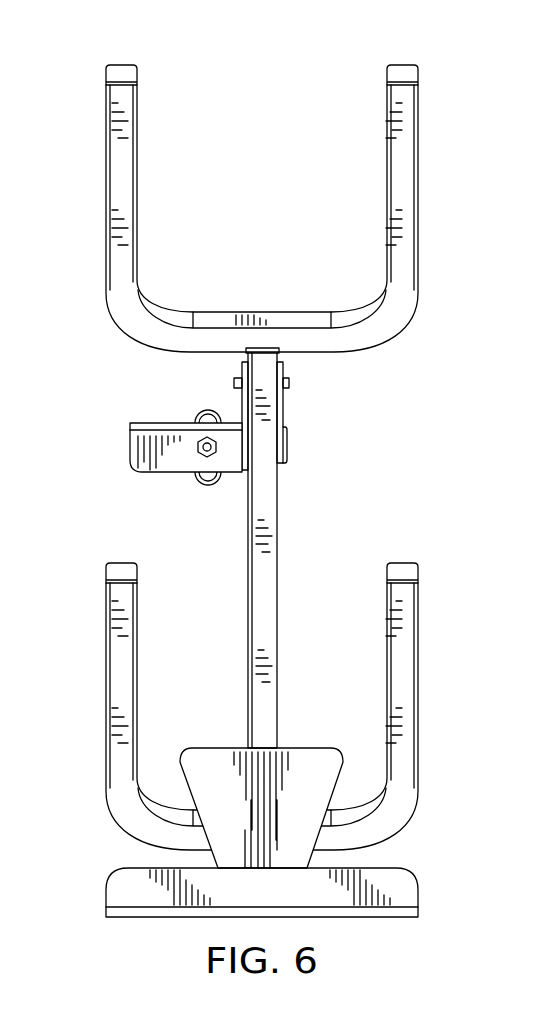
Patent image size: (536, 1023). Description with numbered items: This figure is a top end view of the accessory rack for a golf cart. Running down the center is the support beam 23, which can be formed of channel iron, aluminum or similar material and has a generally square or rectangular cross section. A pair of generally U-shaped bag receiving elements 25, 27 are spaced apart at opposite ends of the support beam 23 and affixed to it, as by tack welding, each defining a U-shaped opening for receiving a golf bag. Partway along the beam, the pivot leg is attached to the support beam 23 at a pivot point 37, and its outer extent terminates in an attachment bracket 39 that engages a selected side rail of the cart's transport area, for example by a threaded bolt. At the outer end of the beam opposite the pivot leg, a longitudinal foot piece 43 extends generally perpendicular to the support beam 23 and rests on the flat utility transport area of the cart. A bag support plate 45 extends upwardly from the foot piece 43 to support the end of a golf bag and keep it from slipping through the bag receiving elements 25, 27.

The support beam 23 is at (247, 602).
The bag receiving element 25 is at (105, 172).
The bag receiving element 27 is at (105, 672).
The pivot point 37 is at (234, 383).
The attachment bracket 39 is at (130, 442).
The foot piece 43 is at (105, 893).
The bag support plate 45 is at (217, 747).